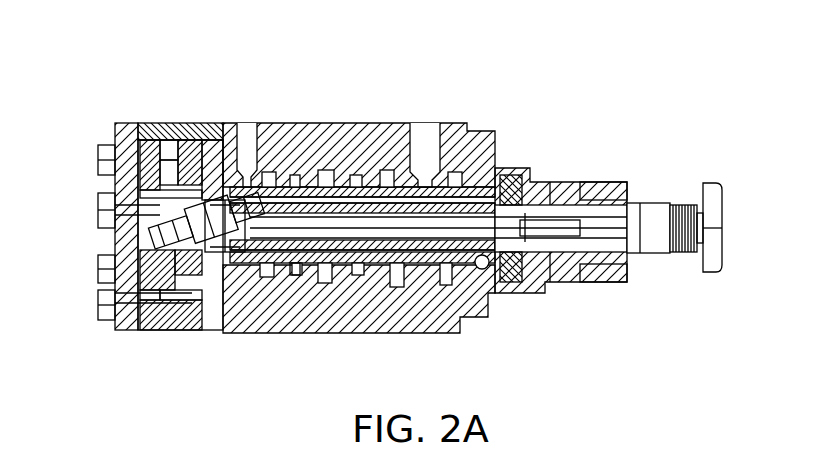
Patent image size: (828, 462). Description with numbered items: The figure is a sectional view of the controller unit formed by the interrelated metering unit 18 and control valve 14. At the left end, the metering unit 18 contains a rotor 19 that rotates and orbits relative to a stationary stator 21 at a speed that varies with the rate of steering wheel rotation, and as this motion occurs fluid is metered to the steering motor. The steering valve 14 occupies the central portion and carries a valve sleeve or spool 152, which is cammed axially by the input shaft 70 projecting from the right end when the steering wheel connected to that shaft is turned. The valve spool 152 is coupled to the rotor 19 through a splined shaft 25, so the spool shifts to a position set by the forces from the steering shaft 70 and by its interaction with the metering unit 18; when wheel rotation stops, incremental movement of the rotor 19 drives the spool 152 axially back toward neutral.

The control valve 14 is at (495, 167).
The metering unit 18 is at (133, 120).
The rotor 19 is at (127, 331).
The stator 21 is at (190, 333).
The splined shaft 25 is at (114, 258).
The input shaft 70 is at (633, 212).
The valve sleeve or spool 152 is at (310, 320).